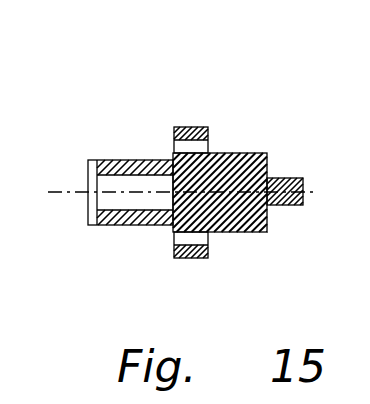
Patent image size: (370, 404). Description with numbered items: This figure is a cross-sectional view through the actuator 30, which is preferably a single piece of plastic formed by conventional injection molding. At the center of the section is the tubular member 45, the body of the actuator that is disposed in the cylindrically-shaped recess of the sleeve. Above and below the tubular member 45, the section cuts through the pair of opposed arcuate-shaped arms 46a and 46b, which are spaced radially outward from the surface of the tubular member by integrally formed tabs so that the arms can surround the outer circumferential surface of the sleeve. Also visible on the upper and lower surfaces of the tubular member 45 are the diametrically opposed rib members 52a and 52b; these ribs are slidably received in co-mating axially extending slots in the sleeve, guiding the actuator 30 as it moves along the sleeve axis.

The actuator 30 is at (181, 169).
The tubular member 45 is at (258, 145).
The arcuate-shaped arm 46a is at (134, 98).
The arcuate-shaped arm 46b is at (230, 279).
The rib member 52a is at (100, 260).
The rib member 52b is at (95, 129).